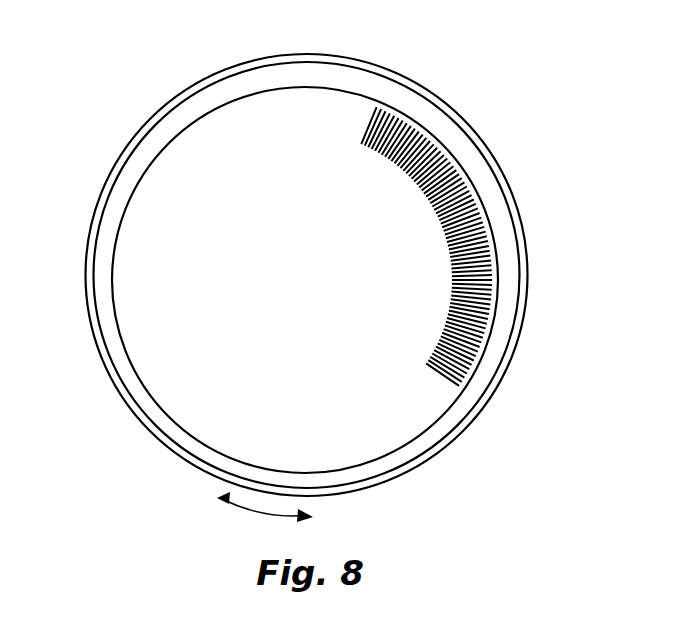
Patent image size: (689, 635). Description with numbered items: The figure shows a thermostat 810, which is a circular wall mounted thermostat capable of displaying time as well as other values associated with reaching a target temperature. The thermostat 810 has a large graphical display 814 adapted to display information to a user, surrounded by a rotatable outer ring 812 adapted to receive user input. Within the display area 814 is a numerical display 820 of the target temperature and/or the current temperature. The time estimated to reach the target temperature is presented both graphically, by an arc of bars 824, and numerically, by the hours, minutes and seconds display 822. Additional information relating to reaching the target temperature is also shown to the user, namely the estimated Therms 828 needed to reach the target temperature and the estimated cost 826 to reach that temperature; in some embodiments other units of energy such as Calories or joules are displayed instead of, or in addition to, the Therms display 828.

The thermostat 810 is at (165, 78).
The rotatable outer ring 812 is at (192, 463).
The graphical display 814 is at (398, 438).
The numerical display 820 is at (259, 207).
The hours, minutes and seconds display 822 is at (296, 131).
The bars 824 is at (488, 245).
The estimated cost 826 is at (382, 359).
The Therms display 828 is at (229, 360).